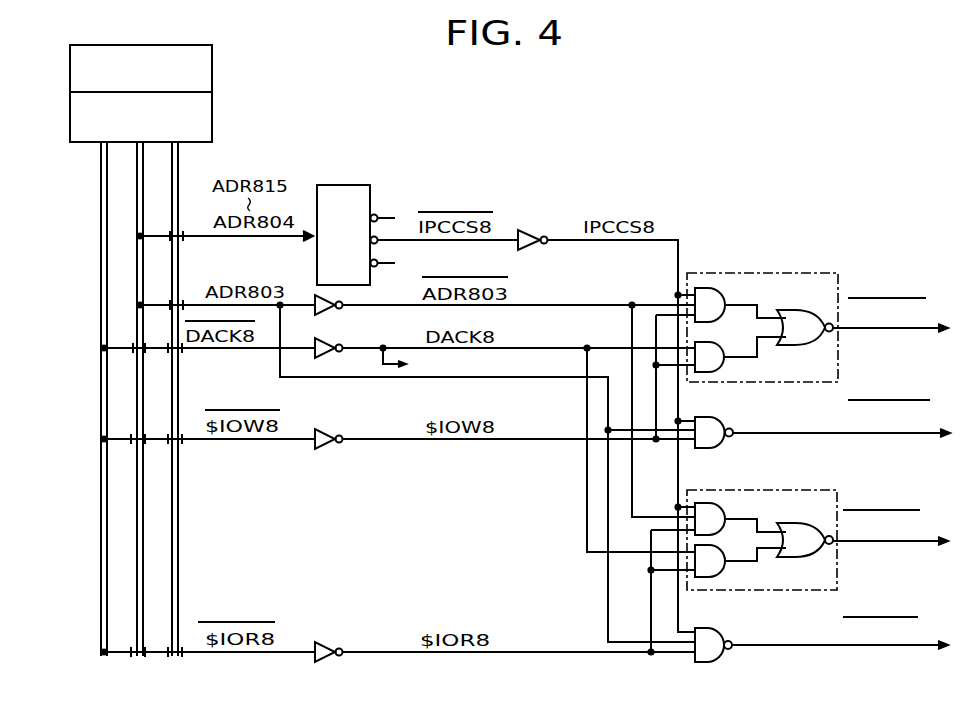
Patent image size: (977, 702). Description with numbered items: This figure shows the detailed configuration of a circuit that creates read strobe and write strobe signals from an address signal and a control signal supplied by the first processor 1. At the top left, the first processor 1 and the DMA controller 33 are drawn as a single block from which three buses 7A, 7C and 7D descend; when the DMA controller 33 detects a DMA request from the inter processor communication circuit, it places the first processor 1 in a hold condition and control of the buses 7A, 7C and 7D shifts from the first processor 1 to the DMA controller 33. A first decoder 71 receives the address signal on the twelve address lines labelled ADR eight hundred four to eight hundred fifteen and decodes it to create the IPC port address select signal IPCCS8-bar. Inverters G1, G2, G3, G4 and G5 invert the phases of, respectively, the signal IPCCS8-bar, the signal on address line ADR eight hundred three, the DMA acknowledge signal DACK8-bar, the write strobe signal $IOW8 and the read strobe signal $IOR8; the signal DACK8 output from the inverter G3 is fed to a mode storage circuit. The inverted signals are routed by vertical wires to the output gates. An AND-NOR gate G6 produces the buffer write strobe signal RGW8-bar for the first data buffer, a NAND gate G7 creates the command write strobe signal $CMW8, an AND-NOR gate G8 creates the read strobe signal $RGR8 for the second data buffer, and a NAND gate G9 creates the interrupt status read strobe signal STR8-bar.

The first processor 1 is at (213, 68).
The DMA controller 33 is at (213, 122).
The bus 7A is at (140, 178).
The bus 7C is at (100, 165).
The bus 7D is at (180, 163).
The first decoder 71 is at (372, 186).
The inverter G1 is at (537, 229).
The inverter G2 is at (334, 312).
The inverter G3 is at (333, 355).
The inverter G4 is at (324, 431).
The inverter G5 is at (326, 642).
The AND-NOR gate G6 is at (790, 273).
The NAND gate G7 is at (722, 418).
The AND-NOR gate G8 is at (790, 490).
The NAND gate G9 is at (723, 661).